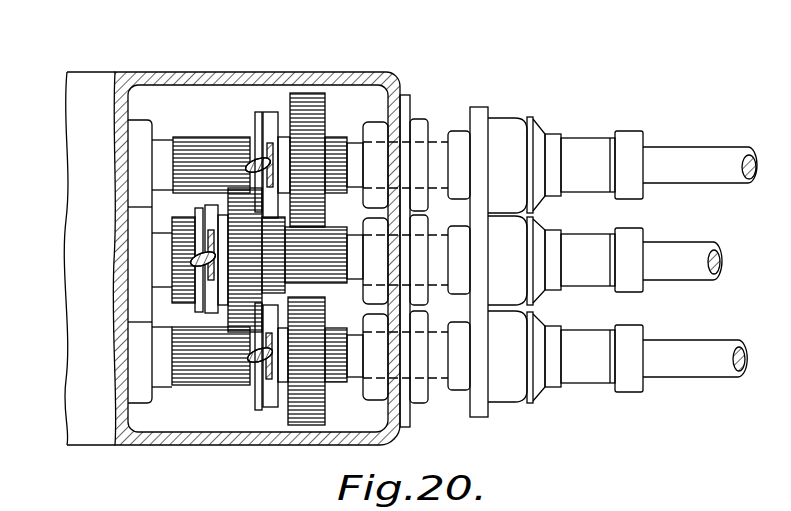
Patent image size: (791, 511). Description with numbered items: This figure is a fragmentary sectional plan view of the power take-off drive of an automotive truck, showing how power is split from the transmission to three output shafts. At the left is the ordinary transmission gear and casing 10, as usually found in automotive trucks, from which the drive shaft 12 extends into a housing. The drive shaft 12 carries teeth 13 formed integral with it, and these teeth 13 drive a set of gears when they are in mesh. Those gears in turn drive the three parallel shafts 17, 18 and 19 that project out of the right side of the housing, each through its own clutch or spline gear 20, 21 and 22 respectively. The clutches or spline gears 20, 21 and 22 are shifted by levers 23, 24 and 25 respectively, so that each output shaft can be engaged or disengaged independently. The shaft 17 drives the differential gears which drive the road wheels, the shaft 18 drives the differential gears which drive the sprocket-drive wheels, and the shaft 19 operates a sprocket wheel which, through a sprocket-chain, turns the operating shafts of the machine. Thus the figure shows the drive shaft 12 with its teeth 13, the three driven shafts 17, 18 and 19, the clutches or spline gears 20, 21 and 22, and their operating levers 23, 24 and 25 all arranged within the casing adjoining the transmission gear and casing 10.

The transmission gear and casing 10 is at (83, 253).
The drive shaft 12 is at (152, 212).
The teeth 13 is at (195, 207).
The shaft 17 is at (683, 152).
The shaft 18 is at (682, 350).
The shaft 19 is at (718, 220).
The clutch or spline gear 20 is at (274, 112).
The clutch or spline gear 21 is at (272, 408).
The clutch or spline gear 22 is at (212, 305).
The lever 23 is at (256, 160).
The lever 24 is at (256, 357).
The lever 25 is at (185, 260).